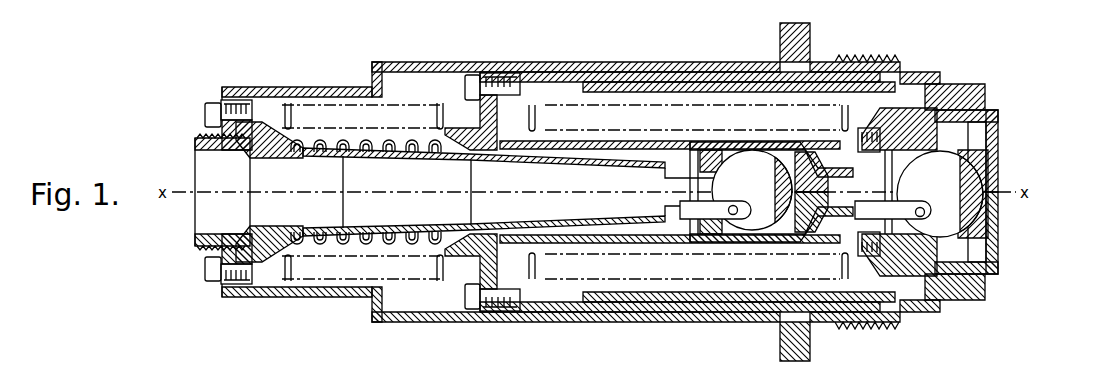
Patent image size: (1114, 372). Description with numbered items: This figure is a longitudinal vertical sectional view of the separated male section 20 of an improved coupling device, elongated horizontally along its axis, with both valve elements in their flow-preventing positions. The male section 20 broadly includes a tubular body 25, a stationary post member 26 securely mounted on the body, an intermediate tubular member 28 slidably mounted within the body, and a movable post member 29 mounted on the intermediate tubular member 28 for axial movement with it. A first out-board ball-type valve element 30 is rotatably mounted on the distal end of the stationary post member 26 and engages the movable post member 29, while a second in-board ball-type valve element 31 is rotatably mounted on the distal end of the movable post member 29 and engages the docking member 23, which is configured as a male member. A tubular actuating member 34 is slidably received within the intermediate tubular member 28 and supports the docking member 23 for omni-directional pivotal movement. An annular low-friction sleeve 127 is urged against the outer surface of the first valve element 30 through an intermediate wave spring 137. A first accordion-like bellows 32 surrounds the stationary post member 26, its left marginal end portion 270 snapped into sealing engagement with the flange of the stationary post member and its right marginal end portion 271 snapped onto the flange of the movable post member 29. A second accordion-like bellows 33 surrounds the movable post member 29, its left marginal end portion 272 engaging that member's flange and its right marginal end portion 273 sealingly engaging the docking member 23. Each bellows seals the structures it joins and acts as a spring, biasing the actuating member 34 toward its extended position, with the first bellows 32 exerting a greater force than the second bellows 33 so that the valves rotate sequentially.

The male section 20 is at (1002, 61).
The docking member 23 is at (1010, 234).
The tubular body 25 is at (462, 58).
The stationary post member 26 is at (310, 163).
The intermediate tubular member 28 is at (672, 68).
The movable post member 29 is at (744, 139).
The first out-board ball-type valve element 30 is at (768, 179).
The second ball-type in-board valve element 31 is at (956, 179).
The first accordion-like bellows 32 is at (330, 106).
The second accordion-like bellows 33 is at (606, 105).
The tubular actuating member 34 is at (634, 286).
The annular low-friction sleeve 127 is at (727, 246).
The wave spring 137 is at (710, 145).
The left marginal end portion 270 is at (275, 128).
The right marginal end portion 271 is at (462, 130).
The left marginal end portion 272 is at (515, 134).
The right marginal end portion 273 is at (860, 152).